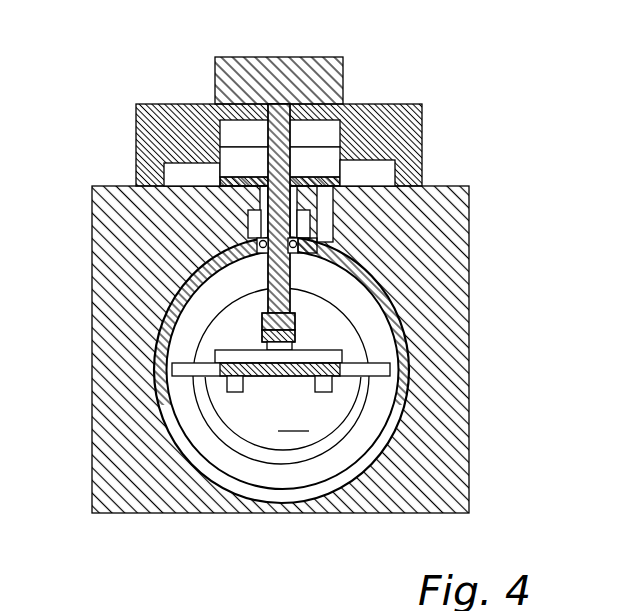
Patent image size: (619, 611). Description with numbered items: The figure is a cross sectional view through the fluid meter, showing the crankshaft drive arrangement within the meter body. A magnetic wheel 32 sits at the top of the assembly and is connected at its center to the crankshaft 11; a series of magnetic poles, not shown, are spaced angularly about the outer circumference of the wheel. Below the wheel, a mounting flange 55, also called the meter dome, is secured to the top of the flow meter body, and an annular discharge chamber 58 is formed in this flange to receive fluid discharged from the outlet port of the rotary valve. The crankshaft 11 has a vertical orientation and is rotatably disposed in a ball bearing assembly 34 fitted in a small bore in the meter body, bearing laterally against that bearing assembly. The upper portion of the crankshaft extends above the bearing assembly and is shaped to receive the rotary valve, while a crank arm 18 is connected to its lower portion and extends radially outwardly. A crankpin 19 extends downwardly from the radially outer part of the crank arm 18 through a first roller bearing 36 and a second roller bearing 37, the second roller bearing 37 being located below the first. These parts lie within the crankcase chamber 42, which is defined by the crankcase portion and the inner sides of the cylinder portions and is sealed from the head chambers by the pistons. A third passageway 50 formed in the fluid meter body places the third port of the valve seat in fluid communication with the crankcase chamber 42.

The crankshaft 11 is at (292, 268).
The crank arm 18 is at (298, 330).
The crankpin 19 is at (307, 352).
The magnetic wheel 32 is at (327, 58).
The ball bearing assembly 34 is at (255, 242).
The first roller bearing 36 is at (257, 348).
The second roller bearing 37 is at (258, 377).
The crankcase chamber 42 is at (293, 418).
The third passageway 50 is at (332, 220).
The mounting flange 55 is at (392, 105).
The annular discharge chamber 58 is at (375, 171).